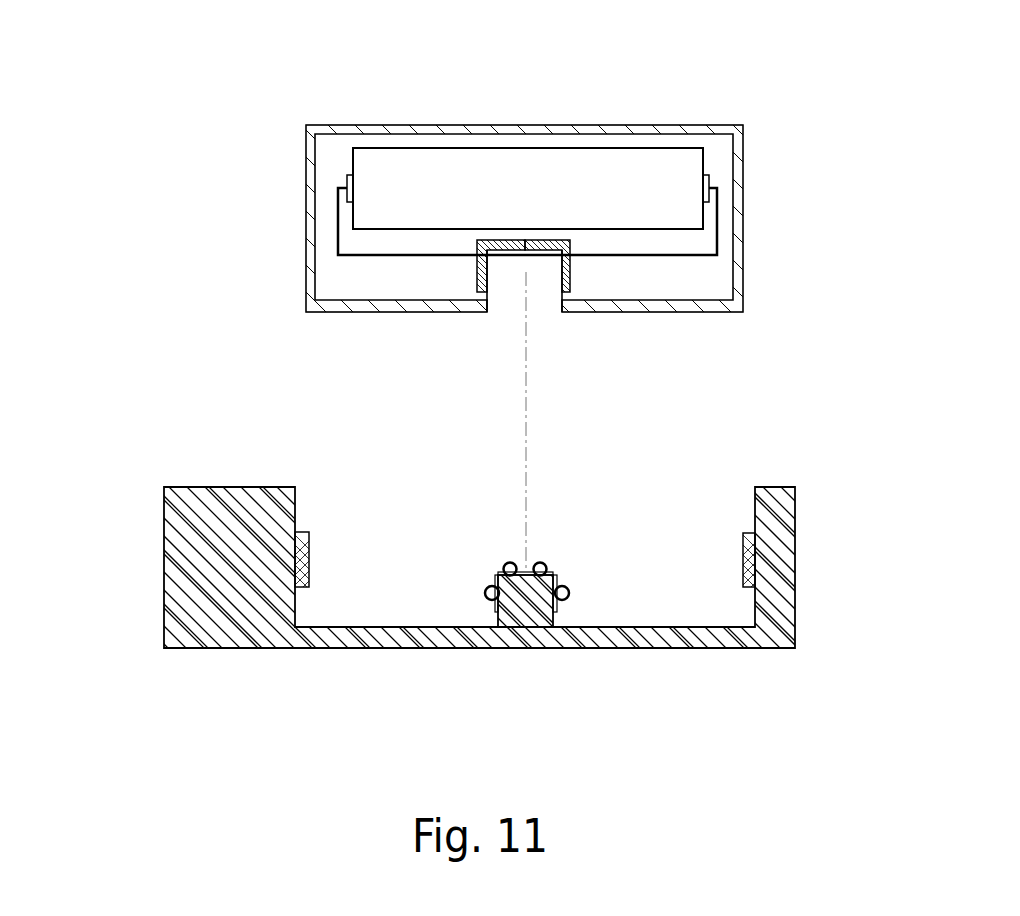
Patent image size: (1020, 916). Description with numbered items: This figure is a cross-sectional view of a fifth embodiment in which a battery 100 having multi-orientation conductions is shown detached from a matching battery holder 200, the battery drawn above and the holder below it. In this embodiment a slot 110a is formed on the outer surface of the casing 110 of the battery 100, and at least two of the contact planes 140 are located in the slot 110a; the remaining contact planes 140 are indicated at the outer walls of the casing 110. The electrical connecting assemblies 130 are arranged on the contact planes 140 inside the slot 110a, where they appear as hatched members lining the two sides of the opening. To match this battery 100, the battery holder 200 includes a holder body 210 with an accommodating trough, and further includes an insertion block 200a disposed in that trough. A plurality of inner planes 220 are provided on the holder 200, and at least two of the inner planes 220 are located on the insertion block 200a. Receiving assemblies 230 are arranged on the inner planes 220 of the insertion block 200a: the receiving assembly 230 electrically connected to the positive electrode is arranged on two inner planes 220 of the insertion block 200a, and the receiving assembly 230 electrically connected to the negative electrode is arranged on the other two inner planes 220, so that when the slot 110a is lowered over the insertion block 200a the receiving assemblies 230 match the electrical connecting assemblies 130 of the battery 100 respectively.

The battery 100 is at (766, 150).
The casing 110 is at (314, 185).
The slot 110a is at (526, 262).
The electrical connecting assemblies 130 is at (476, 250).
The contact planes 140 is at (300, 128).
The battery holder 200 is at (146, 528).
The insertion block 200a is at (523, 608).
The holder body 210 is at (207, 632).
The inner planes 220 is at (300, 524).
The receiving assemblies 230 is at (500, 574).